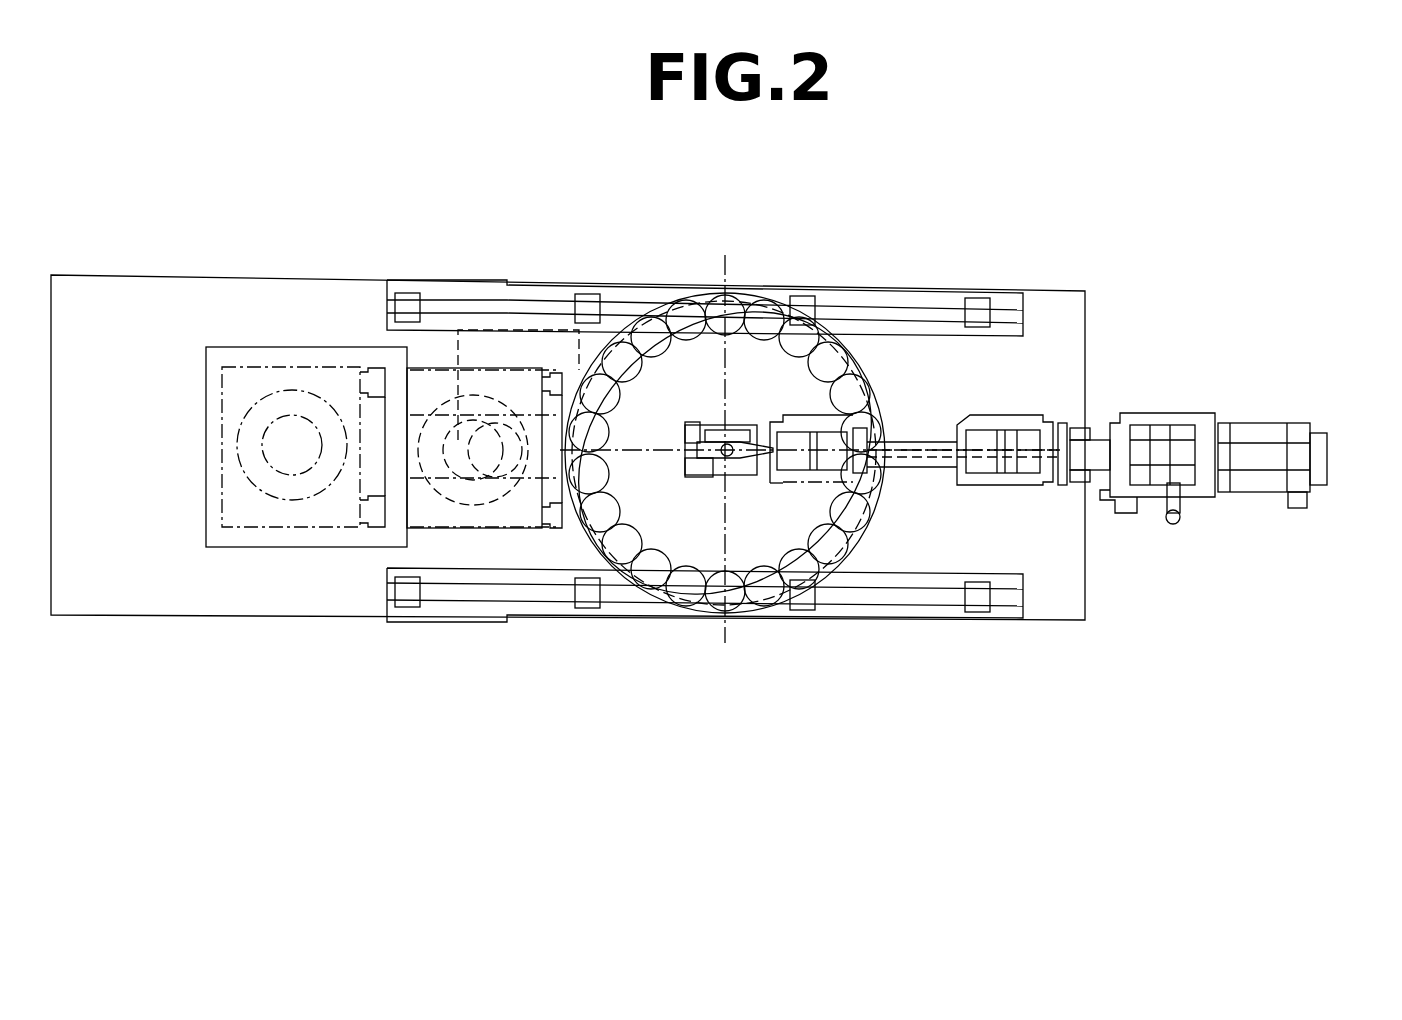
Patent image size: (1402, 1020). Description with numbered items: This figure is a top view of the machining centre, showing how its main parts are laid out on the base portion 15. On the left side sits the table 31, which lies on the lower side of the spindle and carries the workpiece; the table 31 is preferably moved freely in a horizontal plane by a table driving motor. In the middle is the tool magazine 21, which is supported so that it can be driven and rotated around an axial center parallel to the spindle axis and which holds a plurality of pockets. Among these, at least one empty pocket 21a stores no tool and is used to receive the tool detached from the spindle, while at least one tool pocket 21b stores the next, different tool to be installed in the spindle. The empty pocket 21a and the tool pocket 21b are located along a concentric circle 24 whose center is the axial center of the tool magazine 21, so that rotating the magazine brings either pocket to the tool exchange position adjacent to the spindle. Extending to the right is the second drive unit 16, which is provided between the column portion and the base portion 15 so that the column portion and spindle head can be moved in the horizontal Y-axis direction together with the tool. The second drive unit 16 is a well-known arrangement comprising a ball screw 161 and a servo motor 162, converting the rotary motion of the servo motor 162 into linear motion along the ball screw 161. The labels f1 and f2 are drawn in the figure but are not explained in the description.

The base portion 15 is at (1077, 583).
The second drive unit 16 is at (1117, 386).
The ball screw 161 is at (940, 440).
The servo motor 162 is at (1253, 428).
The tool magazine 21 is at (725, 462).
The empty pocket 21a is at (680, 305).
The tool pocket 21b is at (777, 305).
The concentric circle 24 is at (835, 595).
The table 31 is at (230, 548).
The feed direction f1 is at (710, 435).
The feed direction f2 is at (747, 305).